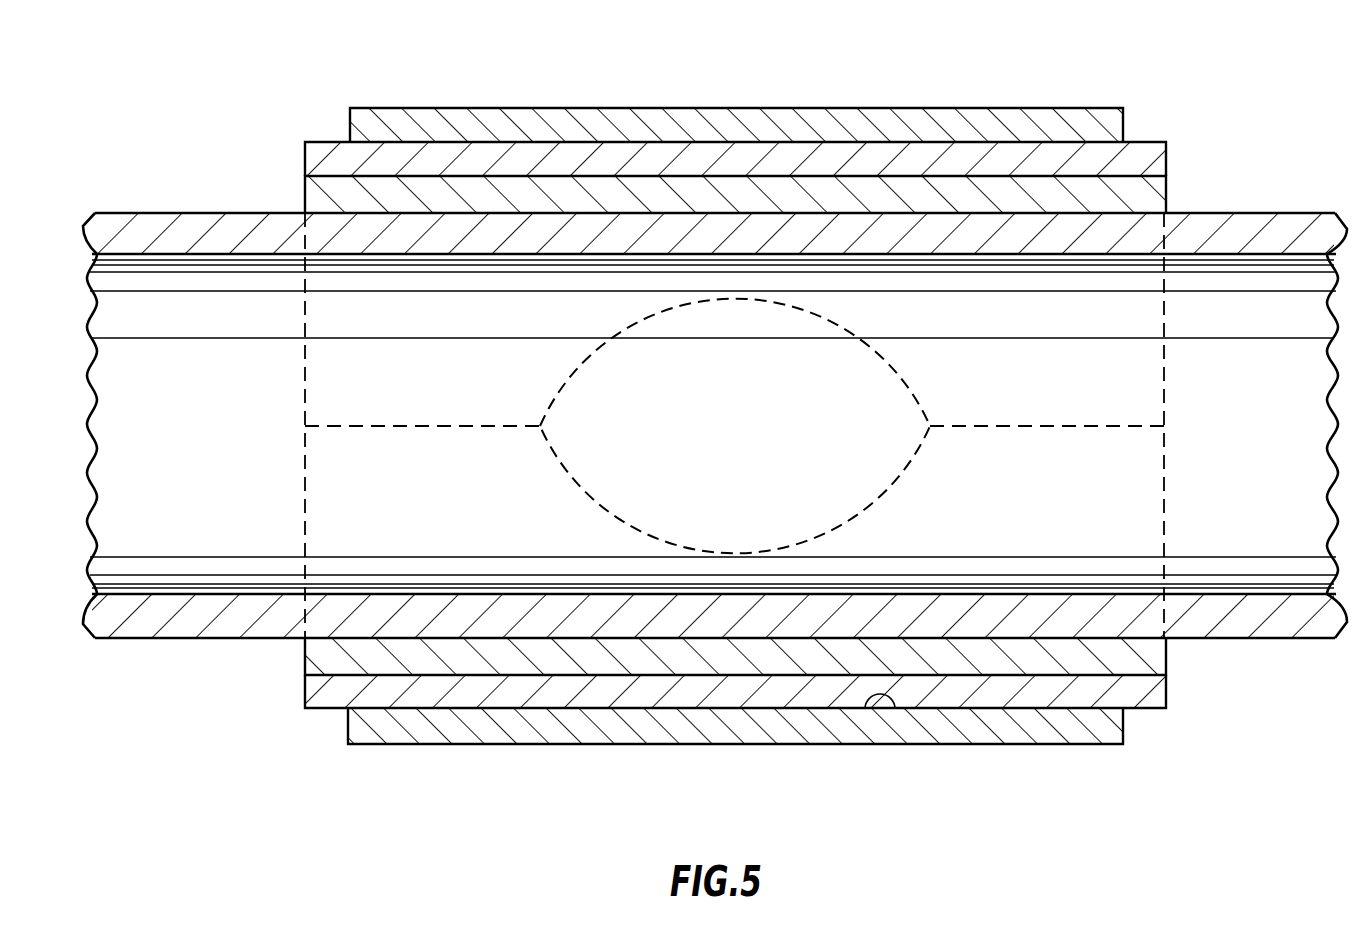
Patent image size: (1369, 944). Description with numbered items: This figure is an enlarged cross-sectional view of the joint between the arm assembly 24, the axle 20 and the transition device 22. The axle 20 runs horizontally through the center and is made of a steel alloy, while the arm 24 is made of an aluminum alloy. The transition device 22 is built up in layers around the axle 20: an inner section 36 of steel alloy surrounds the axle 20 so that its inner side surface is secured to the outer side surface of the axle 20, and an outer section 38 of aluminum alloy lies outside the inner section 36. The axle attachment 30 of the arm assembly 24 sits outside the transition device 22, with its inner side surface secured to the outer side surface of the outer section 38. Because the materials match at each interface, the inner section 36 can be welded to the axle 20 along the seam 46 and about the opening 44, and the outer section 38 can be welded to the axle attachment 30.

The axle 20 is at (130, 211).
The transition device 22 is at (298, 694).
The arm assembly 24 is at (910, 106).
The axle attachment 30 is at (893, 706).
The inner section 36 is at (1167, 205).
The outer section 38 is at (1167, 160).
The opening 44 is at (625, 522).
The seam 46 is at (458, 423).